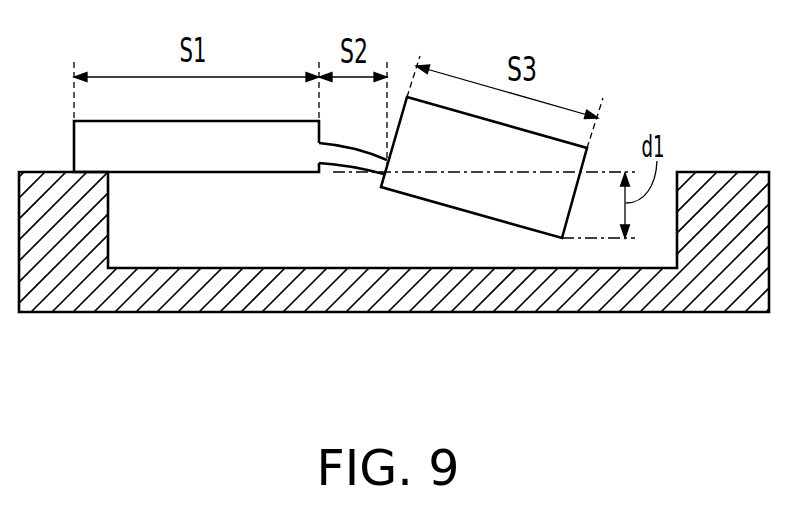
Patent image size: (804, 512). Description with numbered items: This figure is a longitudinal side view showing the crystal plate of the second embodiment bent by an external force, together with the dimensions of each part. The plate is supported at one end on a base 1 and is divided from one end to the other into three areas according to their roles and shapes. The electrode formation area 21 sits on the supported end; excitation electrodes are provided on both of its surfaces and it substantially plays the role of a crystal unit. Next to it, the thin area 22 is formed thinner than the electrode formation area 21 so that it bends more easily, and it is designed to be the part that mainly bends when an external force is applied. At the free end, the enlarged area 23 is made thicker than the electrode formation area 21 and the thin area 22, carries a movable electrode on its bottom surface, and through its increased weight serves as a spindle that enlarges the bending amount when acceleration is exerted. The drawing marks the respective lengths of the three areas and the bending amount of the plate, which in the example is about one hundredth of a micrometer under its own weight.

The base 1 is at (642, 313).
The electrode formation area 21 is at (195, 173).
The thin area 22 is at (340, 164).
The enlarged area 23 is at (483, 215).